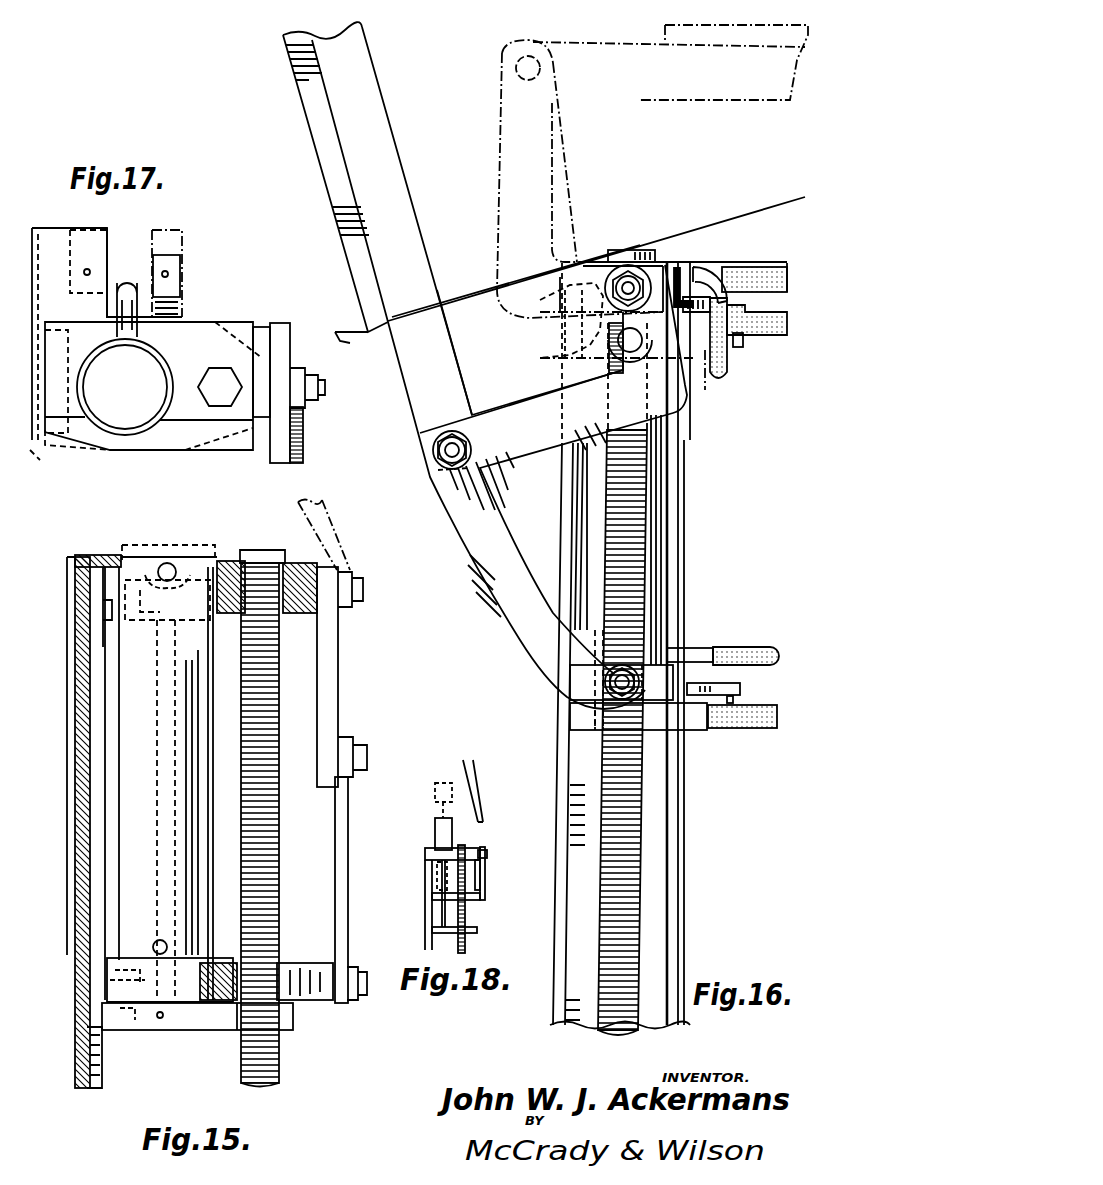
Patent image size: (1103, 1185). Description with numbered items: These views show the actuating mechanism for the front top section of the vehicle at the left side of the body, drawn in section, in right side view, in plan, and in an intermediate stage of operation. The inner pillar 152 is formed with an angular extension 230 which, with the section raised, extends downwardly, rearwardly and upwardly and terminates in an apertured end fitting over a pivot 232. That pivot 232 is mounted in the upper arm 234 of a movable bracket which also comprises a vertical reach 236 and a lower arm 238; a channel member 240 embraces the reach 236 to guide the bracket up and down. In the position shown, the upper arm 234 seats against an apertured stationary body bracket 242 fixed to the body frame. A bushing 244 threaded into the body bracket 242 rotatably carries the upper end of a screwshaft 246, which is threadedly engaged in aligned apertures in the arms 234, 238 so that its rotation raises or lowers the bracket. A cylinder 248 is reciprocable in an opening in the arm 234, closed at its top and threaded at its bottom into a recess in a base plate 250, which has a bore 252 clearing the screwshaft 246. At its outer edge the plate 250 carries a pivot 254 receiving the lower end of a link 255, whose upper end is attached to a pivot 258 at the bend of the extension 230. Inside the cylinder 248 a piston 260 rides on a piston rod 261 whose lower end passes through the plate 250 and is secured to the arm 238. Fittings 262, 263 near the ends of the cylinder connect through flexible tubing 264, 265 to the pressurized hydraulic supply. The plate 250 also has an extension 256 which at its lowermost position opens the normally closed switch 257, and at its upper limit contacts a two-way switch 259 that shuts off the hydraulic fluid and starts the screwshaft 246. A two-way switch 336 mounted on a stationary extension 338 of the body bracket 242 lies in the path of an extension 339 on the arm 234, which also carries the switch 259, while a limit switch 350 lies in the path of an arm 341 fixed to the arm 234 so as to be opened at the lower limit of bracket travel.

In FIG. 15, the inner pillar 152 is at (330, 532).
In FIG. 16, the inner pillar 152 is at (387, 126).
In FIG. 18, the inner pillar 152 is at (478, 797).
In FIG. 15, the angular extension 230 is at (338, 675).
In FIG. 16, the angular extension 230 is at (533, 413).
In FIG. 17, the pivot 232 is at (292, 372).
In FIG. 15, the pivot 232 is at (343, 609).
In FIG. 16, the pivot 232 is at (613, 248).
In FIG. 17, the upper arm 234 is at (277, 323).
In FIG. 15, the upper arm 234 is at (288, 613).
In FIG. 16, the upper arm 234 is at (592, 281).
In FIG. 18, the upper arm 234 is at (485, 866).
In FIG. 15, the vertical reach 236 is at (100, 797).
In FIG. 16, the vertical reach 236 is at (665, 821).
In FIG. 15, the lower arm 238 is at (197, 1026).
In FIG. 16, the lower arm 238 is at (660, 722).
In FIG. 18, the lower arm 238 is at (466, 936).
In FIG. 17, the channel member 240 is at (40, 450).
In FIG. 15, the channel member 240 is at (90, 1051).
In FIG. 16, the channel member 240 is at (677, 920).
In FIG. 18, the channel member 240 is at (427, 949).
In FIG. 17, the body bracket 242 is at (222, 324).
In FIG. 15, the body bracket 242 is at (73, 594).
In FIG. 16, the body bracket 242 is at (650, 219).
In FIG. 18, the body bracket 242 is at (430, 859).
In FIG. 17, the bushing 244 is at (216, 398).
In FIG. 15, the bushing 244 is at (262, 553).
In FIG. 16, the bushing 244 is at (650, 251).
In FIG. 15, the screwshaft 246 is at (278, 908).
In FIG. 16, the screwshaft 246 is at (647, 535).
In FIG. 18, the screwshaft 246 is at (467, 917).
In FIG. 17, the cylinder 248 is at (160, 366).
In FIG. 15, the cylinder 248 is at (125, 714).
In FIG. 16, the cylinder 248 is at (663, 489).
In FIG. 18, the cylinder 248 is at (437, 821).
In FIG. 15, the base plate 250 is at (219, 1000).
In FIG. 16, the base plate 250 is at (685, 669).
In FIG. 18, the base plate 250 is at (478, 905).
In FIG. 15, the bore 252 is at (230, 1030).
In FIG. 15, the pivot 254 is at (350, 1012).
In FIG. 16, the pivot 254 is at (600, 704).
In FIG. 17, the link 255 is at (295, 441).
In FIG. 15, the link 255 is at (336, 845).
In FIG. 16, the link 255 is at (563, 156).
In FIG. 18, the link 255 is at (483, 889).
In FIG. 15, the extension 256 is at (107, 980).
In FIG. 16, the extension 256 is at (706, 377).
In FIG. 15, the switch 257 is at (122, 1031).
In FIG. 16, the switch 257 is at (746, 730).
In FIG. 15, the pivot 258 is at (340, 787).
In FIG. 16, the pivot 258 is at (445, 471).
In FIG. 18, the pivot 258 is at (486, 852).
In FIG. 15, the two-way switch 259 is at (108, 628).
In FIG. 16, the two-way switch 259 is at (745, 341).
In FIG. 15, the piston 260 is at (180, 640).
In FIG. 18, the piston 260 is at (440, 846).
In FIG. 15, the piston rod 261 is at (170, 730).
In FIG. 18, the piston rod 261 is at (440, 919).
In FIG. 15, the fitting 262 is at (170, 556).
In FIG. 16, the fitting 262 is at (688, 264).
In FIG. 18, the fitting 262 is at (440, 801).
In FIG. 15, the fitting 263 is at (160, 940).
In FIG. 16, the fitting 263 is at (696, 648).
In FIG. 16, the flexible tubing 264 is at (726, 374).
In FIG. 16, the flexible tubing 265 is at (745, 646).
In FIG. 17, the two-way switch 336 is at (87, 232).
In FIG. 15, the two-way switch 336 is at (107, 556).
In FIG. 16, the two-way switch 336 is at (768, 268).
In FIG. 17, the stationary extension 338 is at (55, 230).
In FIG. 16, the stationary extension 338 is at (726, 268).
In FIG. 17, the extension 339 is at (108, 246).
In FIG. 16, the extension 339 is at (752, 301).
In FIG. 17, the arm 341 is at (178, 267).
In FIG. 15, the arm 341 is at (167, 600).
In FIG. 16, the arm 341 is at (740, 320).
In FIG. 17, the limit switch 350 is at (183, 230).